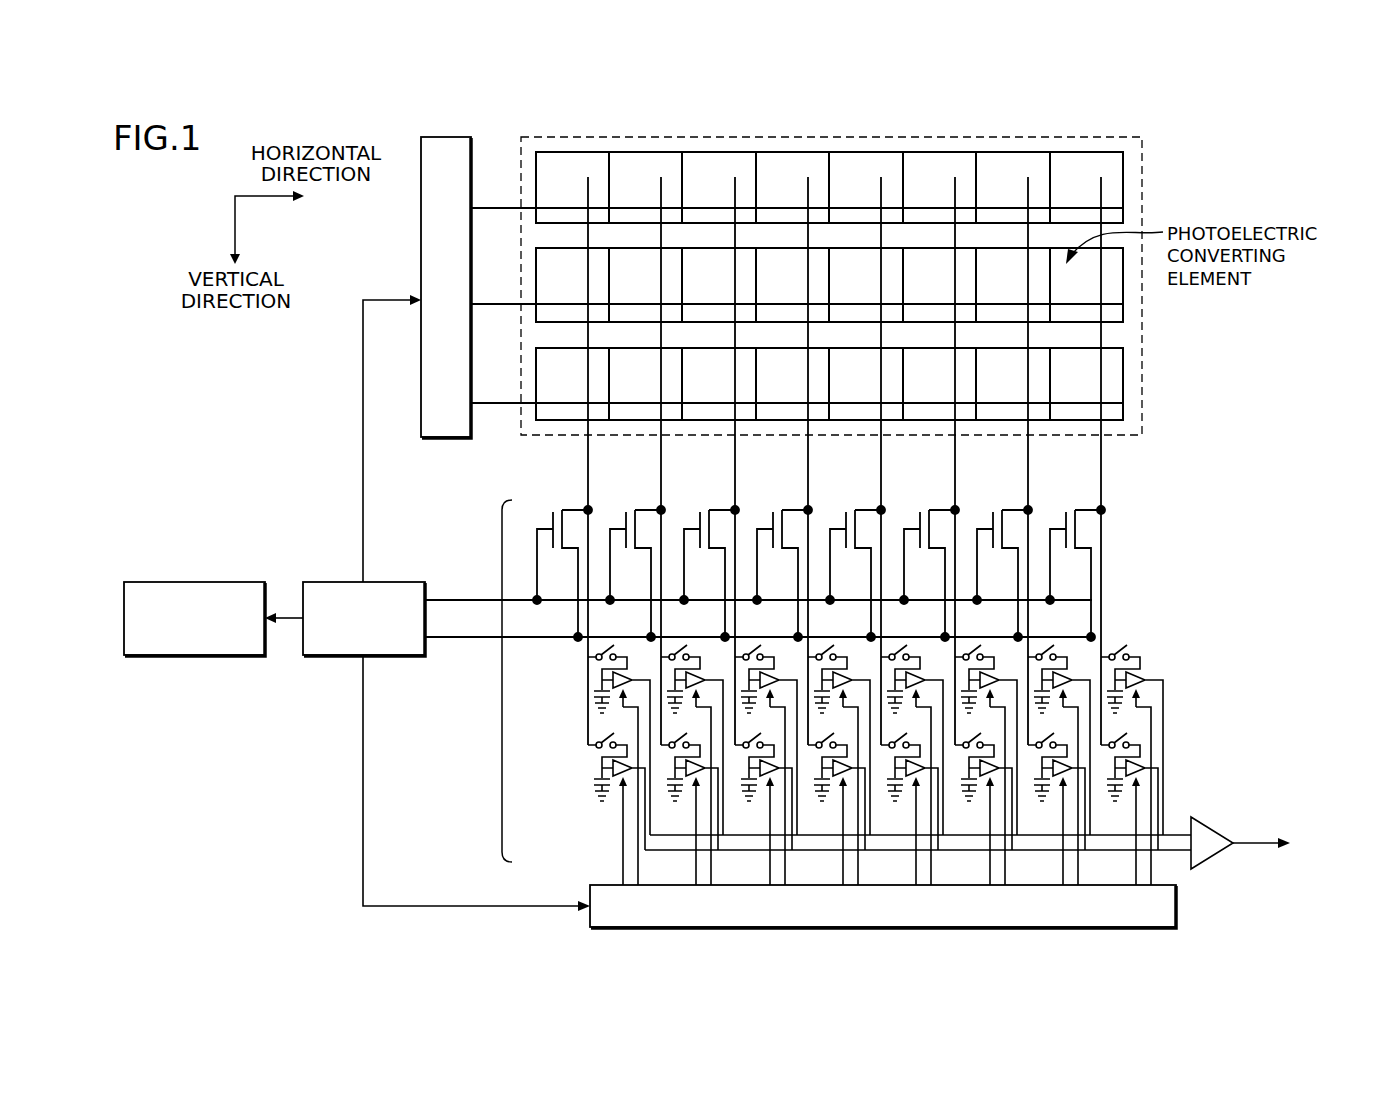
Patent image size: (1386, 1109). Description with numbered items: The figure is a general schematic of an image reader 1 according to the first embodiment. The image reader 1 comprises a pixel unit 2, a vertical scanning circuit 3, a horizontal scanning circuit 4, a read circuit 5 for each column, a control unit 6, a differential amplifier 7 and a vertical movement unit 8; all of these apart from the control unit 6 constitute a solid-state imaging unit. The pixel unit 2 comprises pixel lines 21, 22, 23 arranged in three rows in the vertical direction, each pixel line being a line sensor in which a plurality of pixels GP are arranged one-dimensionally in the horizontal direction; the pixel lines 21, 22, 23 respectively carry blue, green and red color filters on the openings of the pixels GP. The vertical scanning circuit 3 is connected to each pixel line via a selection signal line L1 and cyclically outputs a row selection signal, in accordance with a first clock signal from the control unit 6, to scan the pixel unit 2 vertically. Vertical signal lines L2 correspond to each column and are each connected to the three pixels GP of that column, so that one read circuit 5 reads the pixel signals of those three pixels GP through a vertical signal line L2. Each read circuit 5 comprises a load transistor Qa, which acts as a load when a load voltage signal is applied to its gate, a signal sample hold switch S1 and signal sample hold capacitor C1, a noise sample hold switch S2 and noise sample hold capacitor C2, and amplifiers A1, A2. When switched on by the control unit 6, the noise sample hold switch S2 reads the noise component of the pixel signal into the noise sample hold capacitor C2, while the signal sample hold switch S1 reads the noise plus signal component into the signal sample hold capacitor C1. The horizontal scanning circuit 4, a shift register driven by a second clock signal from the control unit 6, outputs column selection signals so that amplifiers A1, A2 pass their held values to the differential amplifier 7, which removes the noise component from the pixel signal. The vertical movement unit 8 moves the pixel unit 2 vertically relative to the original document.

The image reader 1 is at (1294, 150).
The pixel unit 2 is at (1144, 432).
The vertical scanning circuit 3 is at (421, 210).
The horizontal scanning circuit 4 is at (1178, 905).
The read circuit 5 is at (502, 684).
The control unit 6 is at (390, 582).
The differential amplifier 7 is at (1214, 827).
The vertical movement unit 8 is at (240, 582).
The pixel line 21 is at (1123, 197).
The pixel line 22 is at (1123, 290).
The pixel line 23 is at (1123, 370).
The pixel GP is at (1123, 167).
The selection signal line L1 is at (496, 202).
The vertical signal line L2 is at (590, 490).
The load transistor Qa is at (811, 572).
The signal sample hold switch S1 is at (849, 667).
The signal sample hold capacitor C1 is at (860, 753).
The noise sample hold switch S2 is at (849, 755).
The noise sample hold capacitor C2 is at (858, 805).
The amplifier A1 is at (634, 672).
The amplifier A2 is at (619, 780).